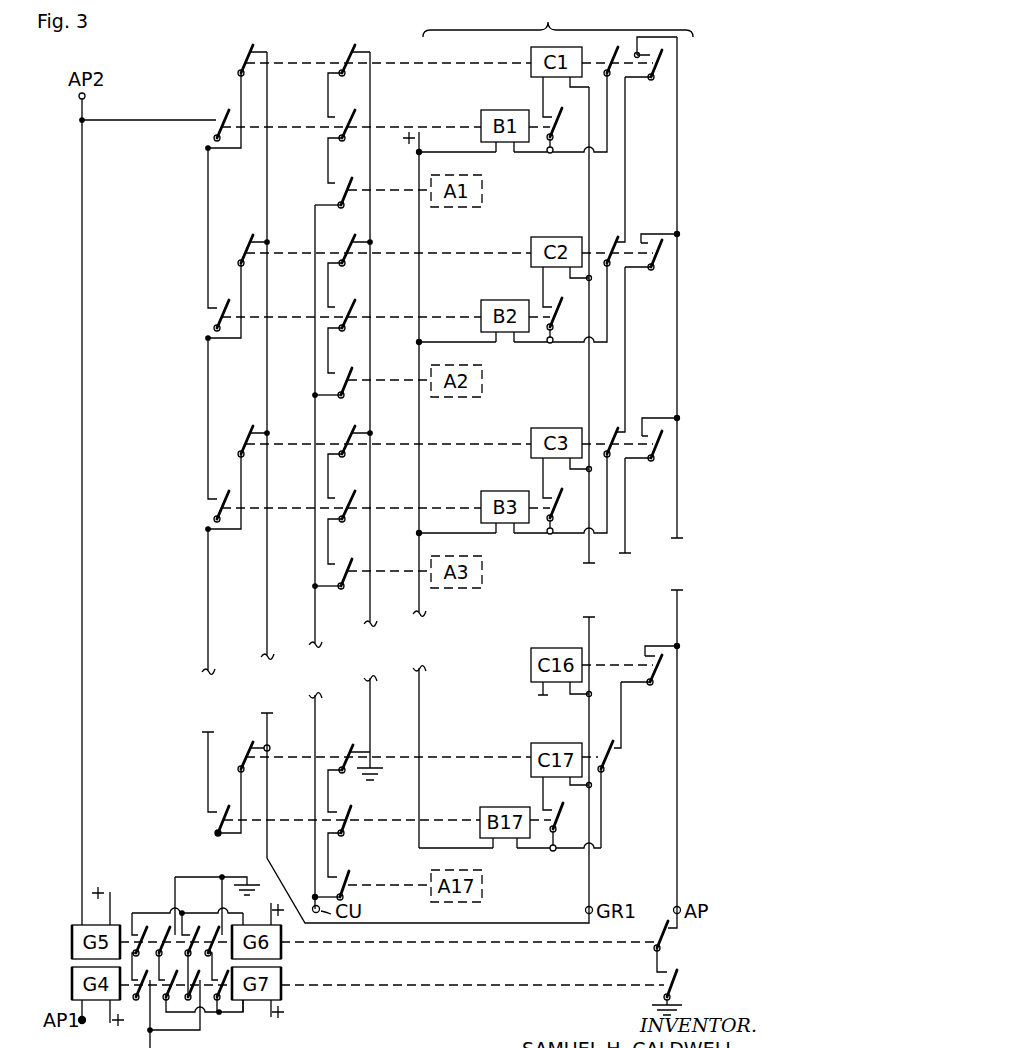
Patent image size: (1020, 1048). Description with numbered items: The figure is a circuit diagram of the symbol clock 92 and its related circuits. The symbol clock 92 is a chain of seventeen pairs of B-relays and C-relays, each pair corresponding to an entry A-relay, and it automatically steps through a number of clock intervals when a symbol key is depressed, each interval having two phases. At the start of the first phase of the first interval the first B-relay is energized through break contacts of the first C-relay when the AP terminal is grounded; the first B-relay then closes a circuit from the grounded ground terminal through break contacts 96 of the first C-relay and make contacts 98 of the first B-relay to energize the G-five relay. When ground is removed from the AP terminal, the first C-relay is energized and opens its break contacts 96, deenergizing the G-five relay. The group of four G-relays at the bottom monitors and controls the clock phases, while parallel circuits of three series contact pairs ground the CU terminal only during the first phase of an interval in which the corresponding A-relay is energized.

The symbol clock 92 is at (558, 18).
The break contacts of relay C1 96 is at (241, 60).
The make contacts of relay B1 98 is at (220, 113).